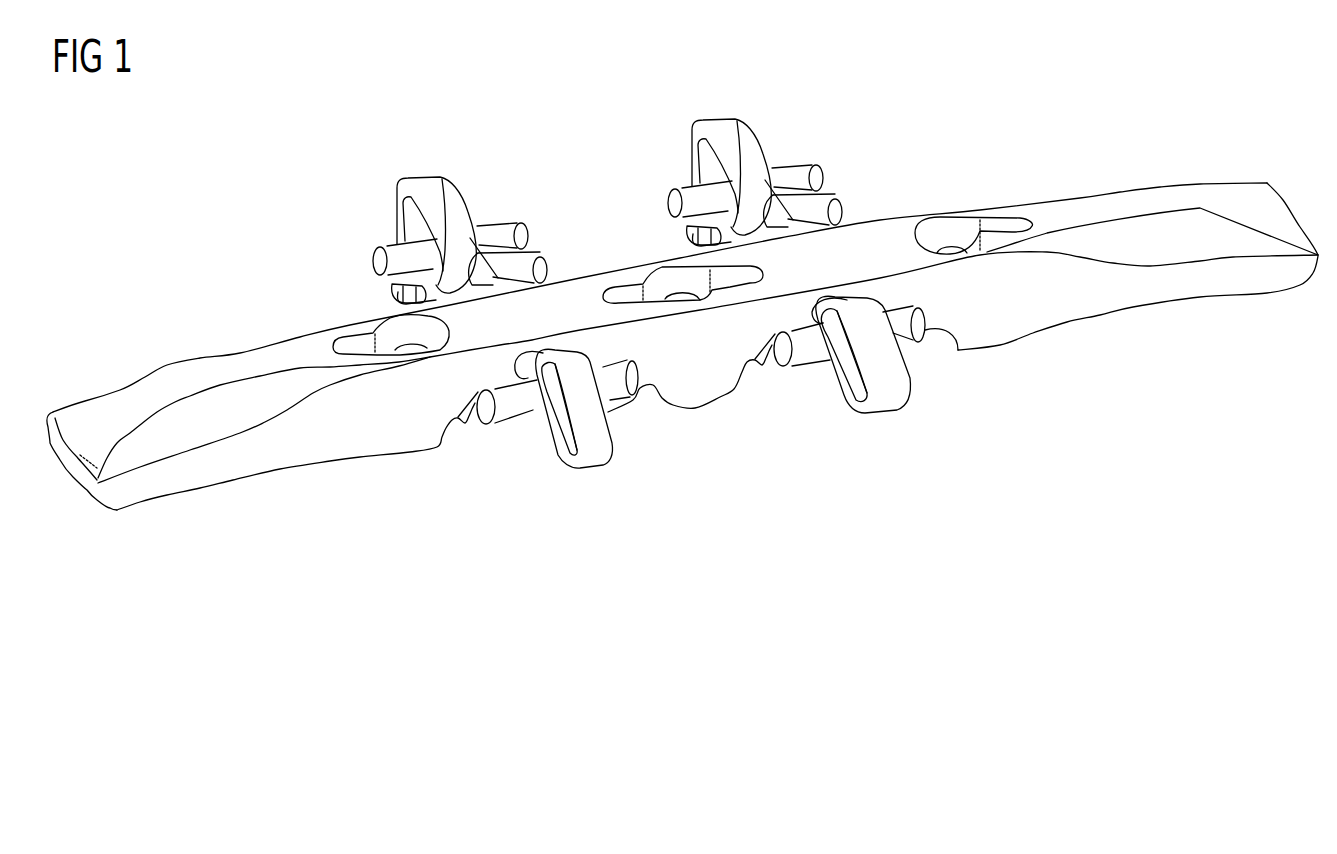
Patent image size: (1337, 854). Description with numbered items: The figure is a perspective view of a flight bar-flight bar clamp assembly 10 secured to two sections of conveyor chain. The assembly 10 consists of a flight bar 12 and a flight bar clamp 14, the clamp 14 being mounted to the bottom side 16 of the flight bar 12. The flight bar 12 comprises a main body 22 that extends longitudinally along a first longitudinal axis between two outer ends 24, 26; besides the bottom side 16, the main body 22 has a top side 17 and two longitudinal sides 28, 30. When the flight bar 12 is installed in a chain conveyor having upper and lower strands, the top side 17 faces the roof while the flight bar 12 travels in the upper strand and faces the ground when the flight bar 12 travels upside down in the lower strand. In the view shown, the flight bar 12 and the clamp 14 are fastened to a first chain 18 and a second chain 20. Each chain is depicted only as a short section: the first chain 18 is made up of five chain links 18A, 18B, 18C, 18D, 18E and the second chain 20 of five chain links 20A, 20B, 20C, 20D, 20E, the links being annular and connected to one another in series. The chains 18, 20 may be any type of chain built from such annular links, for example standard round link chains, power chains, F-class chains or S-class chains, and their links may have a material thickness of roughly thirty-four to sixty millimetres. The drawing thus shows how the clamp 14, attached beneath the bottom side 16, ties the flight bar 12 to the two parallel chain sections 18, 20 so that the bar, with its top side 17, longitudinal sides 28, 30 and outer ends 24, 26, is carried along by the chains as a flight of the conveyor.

The flight bar-flight bar clamp assembly 10 is at (246, 212).
The flight bar 12 is at (162, 362).
The flight bar clamp 14 is at (778, 383).
The bottom side 16 is at (335, 482).
The top side 17 is at (242, 360).
The first chain 18 is at (711, 105).
The chain link 18A is at (886, 390).
The chain link 18B is at (911, 335).
The chain link 18C is at (838, 205).
The chain link 18D is at (803, 163).
The chain link 18E is at (738, 143).
The second chain 20 is at (405, 165).
The chain link 20A is at (589, 445).
The chain link 20B is at (508, 415).
The chain link 20C is at (540, 258).
The chain link 20D is at (512, 220).
The chain link 20E is at (446, 195).
The main body 22 is at (888, 240).
The outer end 24 is at (1283, 215).
The outer end 26 is at (78, 423).
The longitudinal side 28 is at (405, 425).
The longitudinal side 30 is at (347, 320).